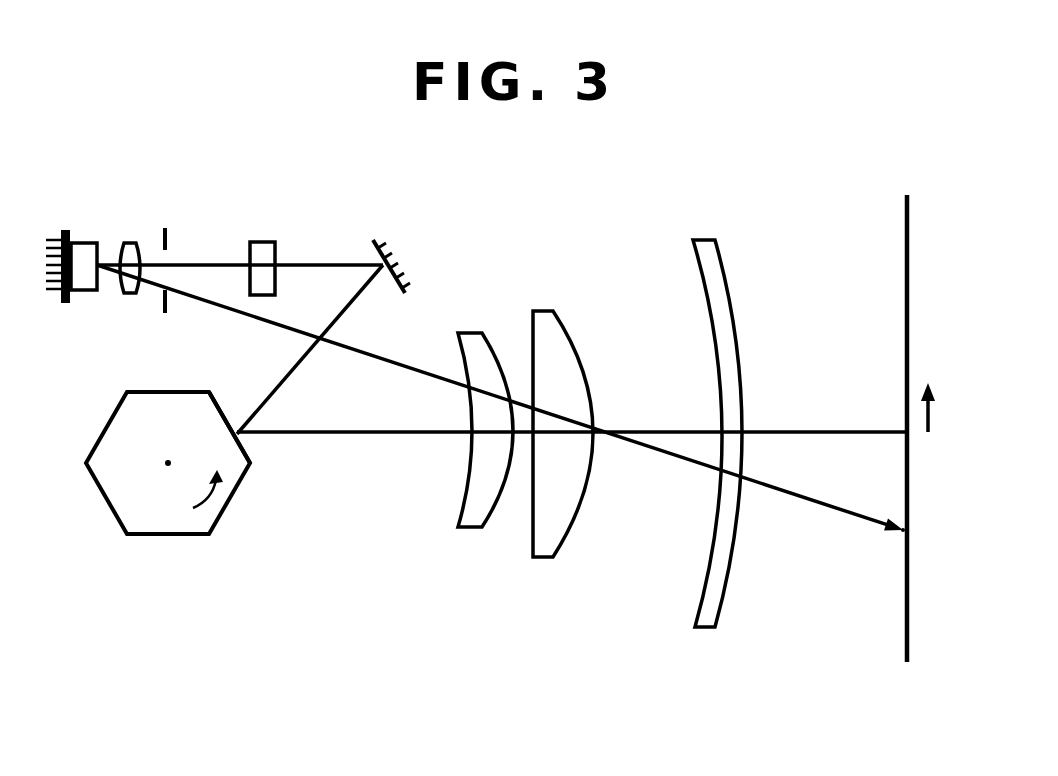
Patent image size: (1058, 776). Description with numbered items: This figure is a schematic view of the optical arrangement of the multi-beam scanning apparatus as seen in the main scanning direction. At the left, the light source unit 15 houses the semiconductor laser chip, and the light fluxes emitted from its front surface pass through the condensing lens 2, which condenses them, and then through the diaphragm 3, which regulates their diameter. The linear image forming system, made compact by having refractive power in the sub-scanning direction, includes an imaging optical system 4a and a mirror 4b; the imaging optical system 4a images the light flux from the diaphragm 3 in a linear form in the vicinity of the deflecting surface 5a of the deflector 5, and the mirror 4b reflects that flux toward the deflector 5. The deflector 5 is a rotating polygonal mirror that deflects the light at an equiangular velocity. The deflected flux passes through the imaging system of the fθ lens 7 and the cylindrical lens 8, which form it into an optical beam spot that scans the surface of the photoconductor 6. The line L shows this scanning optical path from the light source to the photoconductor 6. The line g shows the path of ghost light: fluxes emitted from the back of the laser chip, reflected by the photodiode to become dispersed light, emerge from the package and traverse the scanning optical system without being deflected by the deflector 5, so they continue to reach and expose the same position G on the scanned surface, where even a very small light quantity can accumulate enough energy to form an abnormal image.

The light source unit 15 is at (80, 240).
The condensing lens 2 is at (130, 243).
The diaphragm 3 is at (168, 240).
The imaging optical system 4a is at (262, 242).
The mirror 4b is at (365, 255).
The line L is at (315, 263).
The line g is at (432, 368).
The deflector 5 is at (223, 517).
The deflecting surface 5a is at (224, 406).
The fθ lens 7 is at (592, 303).
The cylindrical lens 8 is at (700, 238).
The photoconductor 6 is at (905, 238).
The position G is at (903, 535).